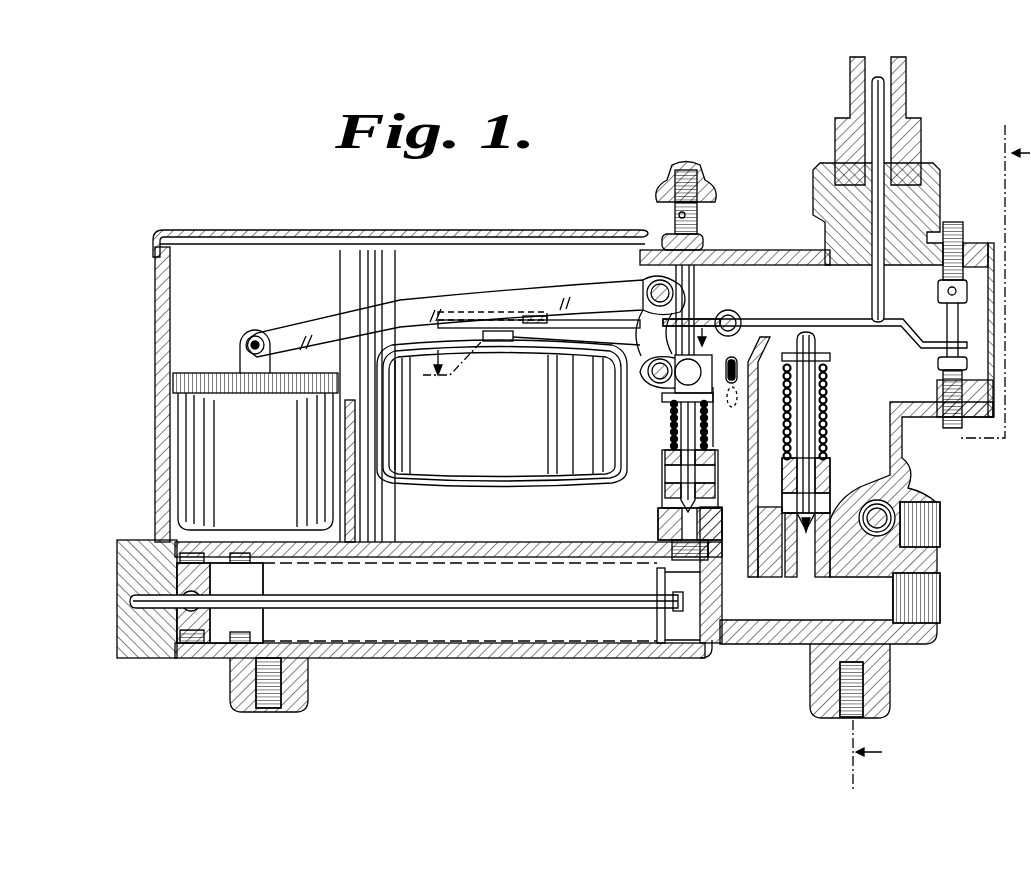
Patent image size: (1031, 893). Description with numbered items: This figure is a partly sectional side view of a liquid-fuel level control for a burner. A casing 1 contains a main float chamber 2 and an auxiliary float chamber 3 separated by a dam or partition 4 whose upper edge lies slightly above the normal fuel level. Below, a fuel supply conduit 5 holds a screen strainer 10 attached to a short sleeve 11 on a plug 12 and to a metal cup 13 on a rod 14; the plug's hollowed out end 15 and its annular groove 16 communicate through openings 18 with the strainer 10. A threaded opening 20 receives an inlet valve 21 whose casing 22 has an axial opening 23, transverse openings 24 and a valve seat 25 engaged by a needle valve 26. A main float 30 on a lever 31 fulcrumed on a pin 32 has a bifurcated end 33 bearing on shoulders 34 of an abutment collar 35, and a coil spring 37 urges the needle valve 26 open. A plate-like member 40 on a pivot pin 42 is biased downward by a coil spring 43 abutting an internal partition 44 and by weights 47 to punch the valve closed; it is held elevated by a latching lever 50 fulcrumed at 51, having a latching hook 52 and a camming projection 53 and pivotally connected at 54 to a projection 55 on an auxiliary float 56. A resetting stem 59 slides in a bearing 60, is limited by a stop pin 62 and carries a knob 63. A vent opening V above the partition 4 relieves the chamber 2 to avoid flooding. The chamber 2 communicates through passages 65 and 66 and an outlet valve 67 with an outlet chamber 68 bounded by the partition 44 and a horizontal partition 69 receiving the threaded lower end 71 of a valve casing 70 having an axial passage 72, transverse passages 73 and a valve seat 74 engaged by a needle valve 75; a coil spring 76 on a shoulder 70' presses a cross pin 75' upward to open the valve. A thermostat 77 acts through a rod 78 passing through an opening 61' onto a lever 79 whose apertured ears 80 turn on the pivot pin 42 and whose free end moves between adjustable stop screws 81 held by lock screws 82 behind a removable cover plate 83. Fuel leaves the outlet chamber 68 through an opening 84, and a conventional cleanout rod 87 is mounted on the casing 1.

The casing 1 is at (165, 450).
The fuel supply or main float chamber 2 is at (533, 520).
The auxiliary float chamber 3 is at (140, 522).
The dam or partition 4 is at (355, 523).
The fuel supply conduit 5 is at (438, 660).
The strainer 10 is at (518, 643).
The short sleeve 11 is at (225, 642).
The plug 12 is at (135, 660).
The imperforate metal cup 13 is at (680, 652).
The rod 14 is at (592, 597).
The hollowed out portion 15 is at (185, 578).
The external annular groove 16 is at (180, 556).
The openings 18 is at (212, 582).
The internally threaded opening 20 is at (672, 545).
The inlet valve 21 is at (662, 473).
The casing 22 is at (708, 462).
The axial opening 23 is at (668, 510).
The transverse openings 24 is at (708, 480).
The valve seat 25 is at (708, 493).
The needle valve 26 is at (681, 447).
The main float 30 is at (487, 430).
The lever 31 is at (573, 342).
The pin 32 is at (652, 383).
The bifurcated end 33 is at (680, 362).
The shoulders 34 is at (710, 425).
The abutment collar 35 is at (752, 342).
The coil spring 37 is at (671, 432).
The plate-like member 40 is at (700, 330).
The pivot pin 42 is at (732, 313).
The coil spring 43 is at (790, 324).
The internal wall or partition 44 is at (757, 430).
The weights 47 is at (522, 320).
The latching lever 50 is at (572, 296).
The fulcrum 51 is at (655, 283).
The latching hook 52 is at (646, 322).
The camming projection 53 is at (688, 295).
The pivotal connection 54 is at (258, 342).
The projection 55 is at (243, 350).
The auxiliary float 56 is at (252, 472).
The resetting stem 59 is at (672, 218).
The bearing or opening 60 is at (642, 240).
The opening 61' is at (898, 214).
The stop pin 62 is at (690, 216).
The knob 63 is at (668, 168).
The passage 65 is at (721, 575).
The passage 66 is at (774, 615).
The outlet valve 67 is at (830, 466).
The outlet chamber 68 is at (856, 523).
The horizontal partition 69 is at (885, 578).
The valve casing 70 is at (824, 588).
The shoulder 70' is at (771, 446).
The externally threaded lower end 71 is at (790, 578).
The axial passage 72 is at (808, 578).
The transverse passages 73 is at (835, 515).
The valve seat 74 is at (785, 518).
The needle valve 75 is at (828, 432).
The cross pin 75' is at (828, 347).
The coil spring 76 is at (824, 422).
The thermostat 77 is at (905, 88).
The rod 78 is at (880, 118).
The lever 79 is at (905, 318).
The apertured ears 80 is at (741, 322).
The adjustable stop screws 81 is at (948, 305).
The lock screws 82 is at (965, 255).
The removable cover plate 83 is at (988, 310).
The opening 84 is at (882, 490).
The cleanout rod 87 is at (892, 518).
The vent opening V is at (740, 372).